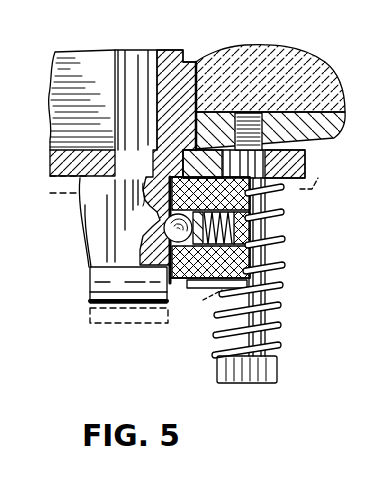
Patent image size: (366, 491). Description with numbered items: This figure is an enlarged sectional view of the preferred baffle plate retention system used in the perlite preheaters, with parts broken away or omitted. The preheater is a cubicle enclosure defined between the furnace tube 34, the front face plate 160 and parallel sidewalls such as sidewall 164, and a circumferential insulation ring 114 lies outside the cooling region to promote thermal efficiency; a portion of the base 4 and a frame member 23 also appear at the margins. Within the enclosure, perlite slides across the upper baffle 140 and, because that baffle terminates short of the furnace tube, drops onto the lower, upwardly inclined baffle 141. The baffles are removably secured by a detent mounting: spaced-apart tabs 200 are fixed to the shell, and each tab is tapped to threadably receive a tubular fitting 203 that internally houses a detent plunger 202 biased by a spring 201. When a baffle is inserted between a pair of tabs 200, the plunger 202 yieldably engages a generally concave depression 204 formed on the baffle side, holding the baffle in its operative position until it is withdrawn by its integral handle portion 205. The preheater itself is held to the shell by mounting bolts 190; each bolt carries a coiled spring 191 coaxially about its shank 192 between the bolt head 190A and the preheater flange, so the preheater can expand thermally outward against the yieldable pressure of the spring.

The lower upwardly inclined baffle 141 is at (82, 72).
The baffle 140 is at (137, 72).
The sidewall 164 is at (196, 62).
The circumferential insulation ring 114 is at (263, 70).
The base 4 is at (325, 123).
The front face plate 160 is at (305, 166).
The tab 200 is at (186, 280).
The spring 201 is at (265, 229).
The detent plunger 202 is at (152, 232).
The tubular fitting 203 is at (265, 258).
The concave depression 204 is at (139, 187).
The integral handle portion 205 is at (90, 288).
The mounting bolt 190 is at (276, 390).
The bolt head 190A is at (247, 385).
The coiled spring 191 is at (266, 295).
The shank 192 is at (264, 341).
The tube 34 is at (358, 273).
The frame member 23 is at (359, 384).